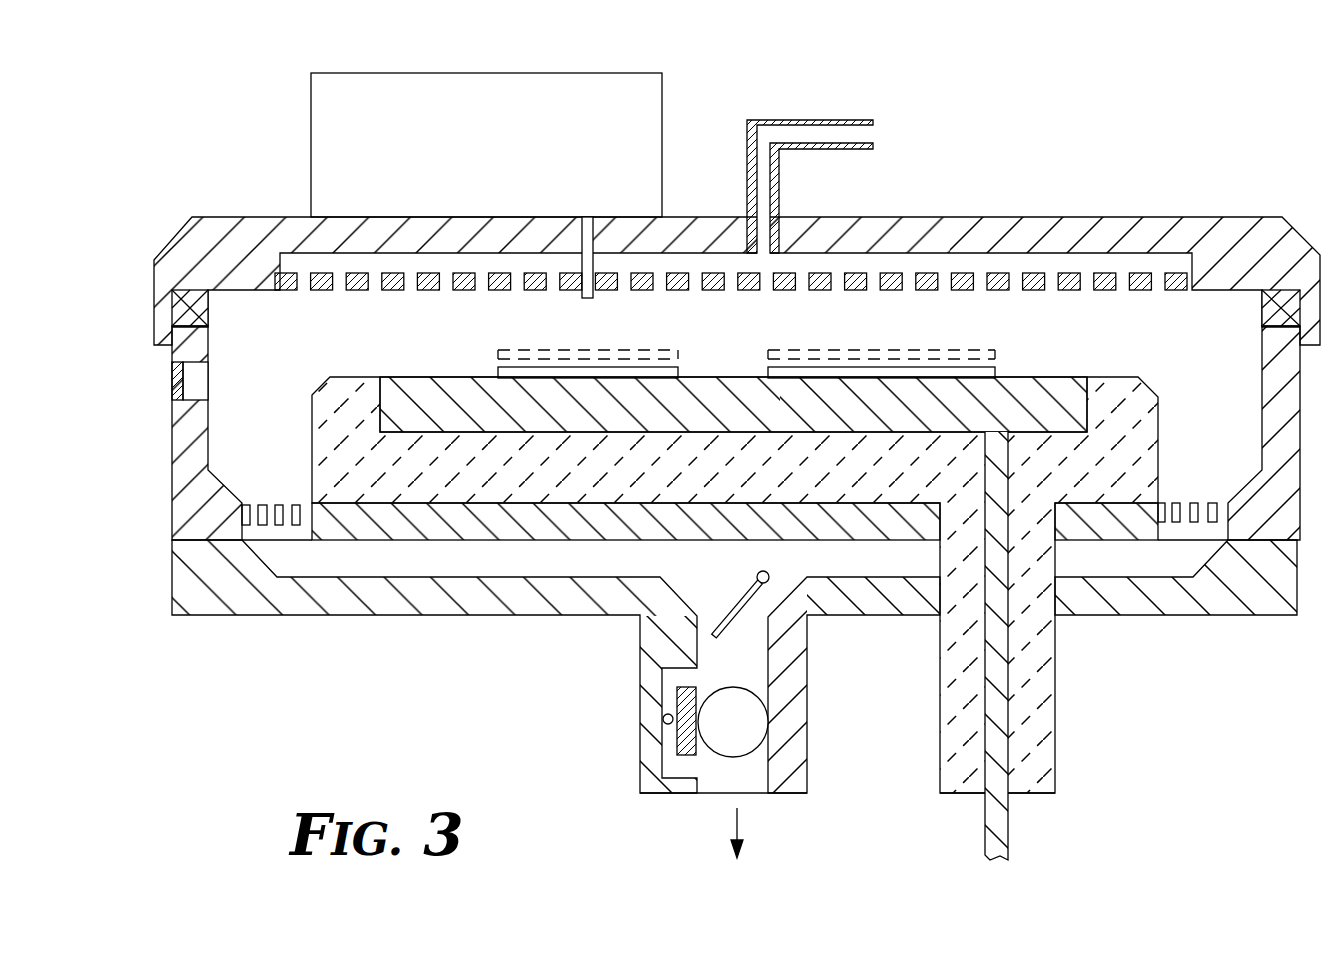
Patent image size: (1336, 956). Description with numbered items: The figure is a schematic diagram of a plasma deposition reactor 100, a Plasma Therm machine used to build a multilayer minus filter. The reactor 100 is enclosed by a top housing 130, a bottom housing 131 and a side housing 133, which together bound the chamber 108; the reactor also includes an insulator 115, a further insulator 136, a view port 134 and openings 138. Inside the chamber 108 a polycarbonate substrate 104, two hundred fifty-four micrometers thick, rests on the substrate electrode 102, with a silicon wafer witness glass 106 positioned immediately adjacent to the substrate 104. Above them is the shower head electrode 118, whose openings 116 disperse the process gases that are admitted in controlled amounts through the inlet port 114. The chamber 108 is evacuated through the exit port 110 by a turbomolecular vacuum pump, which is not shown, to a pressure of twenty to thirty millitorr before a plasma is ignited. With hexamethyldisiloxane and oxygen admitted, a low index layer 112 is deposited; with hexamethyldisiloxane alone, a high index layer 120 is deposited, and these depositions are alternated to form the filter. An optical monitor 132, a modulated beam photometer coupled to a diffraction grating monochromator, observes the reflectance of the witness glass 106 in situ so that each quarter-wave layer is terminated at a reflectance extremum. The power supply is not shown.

The plasma deposition reactor 100 is at (705, 456).
The substrate electrode 102 is at (723, 388).
The polycarbonate substrate 104 is at (760, 372).
The witness glass 106 is at (687, 373).
The chamber 108 is at (312, 345).
The exit port 110 is at (755, 782).
The low index layer 112 is at (498, 360).
The inlet port 114 is at (940, 132).
The insulator 115 is at (1043, 757).
The openings 116 is at (1020, 277).
The shower head electrode 118 is at (1142, 273).
The high index layer 120 is at (562, 347).
The top housing 130 is at (183, 245).
The bottom housing 131 is at (183, 593).
The optical monitor 132 is at (650, 93).
The side housing 133 is at (172, 462).
The view port 134 is at (172, 383).
The insulator 136 is at (408, 533).
The openings 138 is at (285, 505).